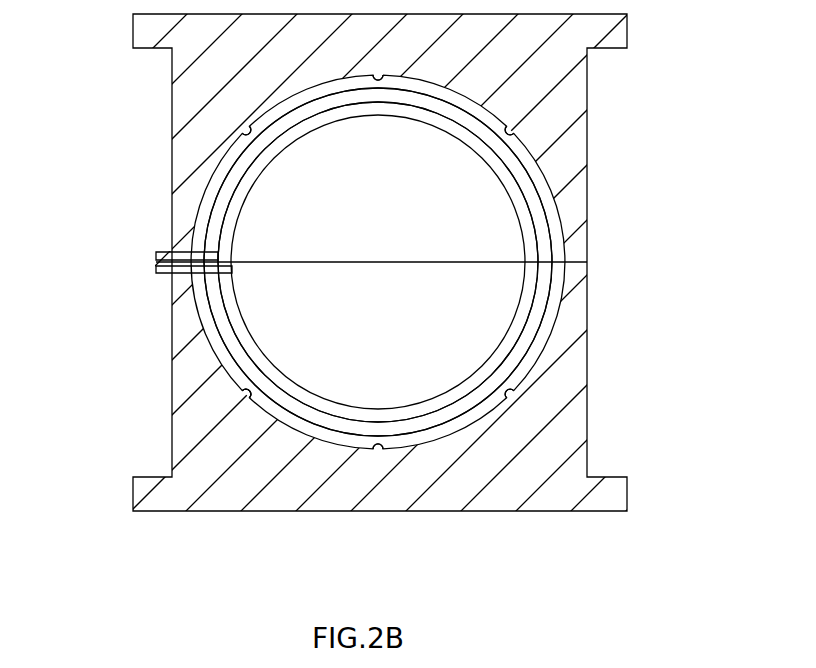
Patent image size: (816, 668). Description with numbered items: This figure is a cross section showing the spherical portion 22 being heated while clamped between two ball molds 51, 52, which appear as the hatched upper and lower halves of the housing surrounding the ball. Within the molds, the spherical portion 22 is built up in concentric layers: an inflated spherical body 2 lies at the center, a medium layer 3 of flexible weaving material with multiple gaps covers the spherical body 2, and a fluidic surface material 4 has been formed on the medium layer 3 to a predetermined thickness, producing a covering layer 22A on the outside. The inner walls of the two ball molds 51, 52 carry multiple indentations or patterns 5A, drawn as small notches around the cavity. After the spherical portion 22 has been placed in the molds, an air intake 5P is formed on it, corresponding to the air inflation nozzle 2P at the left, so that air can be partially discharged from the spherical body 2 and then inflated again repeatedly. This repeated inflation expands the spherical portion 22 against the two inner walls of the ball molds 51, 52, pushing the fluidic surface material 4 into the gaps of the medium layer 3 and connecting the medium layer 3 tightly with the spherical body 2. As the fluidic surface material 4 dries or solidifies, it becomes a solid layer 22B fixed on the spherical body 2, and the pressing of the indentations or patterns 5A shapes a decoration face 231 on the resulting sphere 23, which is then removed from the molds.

The ball mold 51 is at (202, 125).
The ball mold 52 is at (185, 327).
The medium layer 3 is at (586, 132).
The fluidic surface material 4 is at (563, 223).
The air intake 5P is at (187, 250).
The air inflation nozzle 2P is at (163, 272).
The spherical body 2 is at (490, 157).
The spherical portion 22 is at (520, 173).
The covering layer 22A is at (540, 228).
The solid layer 22B is at (567, 280).
The sphere 23 is at (550, 330).
The decoration face 231 is at (248, 400).
The indentations or patterns 5A is at (248, 393).